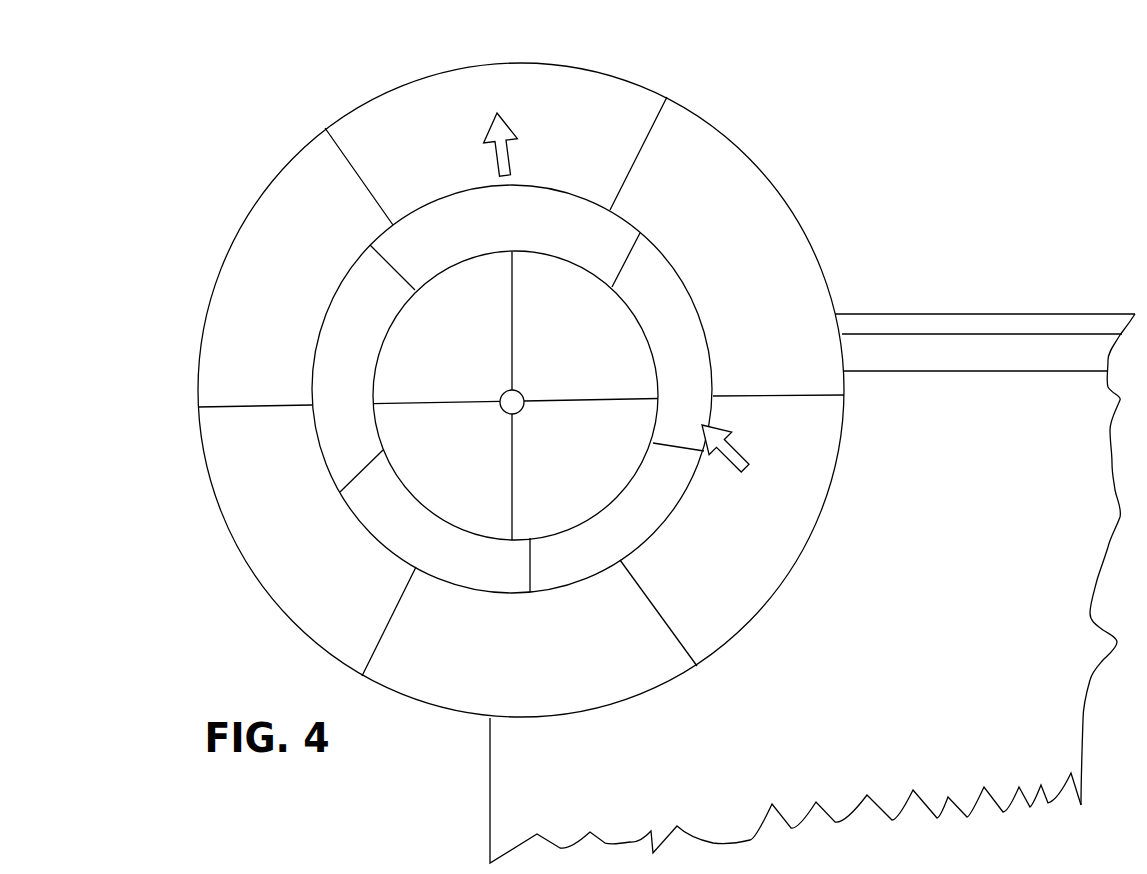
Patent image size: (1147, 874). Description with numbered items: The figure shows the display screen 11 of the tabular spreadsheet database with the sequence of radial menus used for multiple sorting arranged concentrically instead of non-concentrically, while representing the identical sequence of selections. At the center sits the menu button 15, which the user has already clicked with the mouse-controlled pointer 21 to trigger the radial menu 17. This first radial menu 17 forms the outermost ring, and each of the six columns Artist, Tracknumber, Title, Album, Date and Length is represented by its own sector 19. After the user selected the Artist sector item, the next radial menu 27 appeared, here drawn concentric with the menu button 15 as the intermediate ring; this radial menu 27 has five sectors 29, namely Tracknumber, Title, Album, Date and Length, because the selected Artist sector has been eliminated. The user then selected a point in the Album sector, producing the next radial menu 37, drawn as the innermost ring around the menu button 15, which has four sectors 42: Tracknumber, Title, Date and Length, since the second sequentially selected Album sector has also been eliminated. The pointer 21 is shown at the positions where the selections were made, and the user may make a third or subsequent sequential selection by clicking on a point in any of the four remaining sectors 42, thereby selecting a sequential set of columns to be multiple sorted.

The display screen 11 is at (908, 531).
The menu button 15 is at (520, 386).
The radial menu 17 is at (588, 64).
The sector 19 is at (575, 144).
The pointer 21 is at (500, 147).
The next radial menu 27 is at (430, 203).
The sector 29 is at (396, 251).
The next radial menu 37 is at (328, 474).
The sector 42 is at (463, 351).